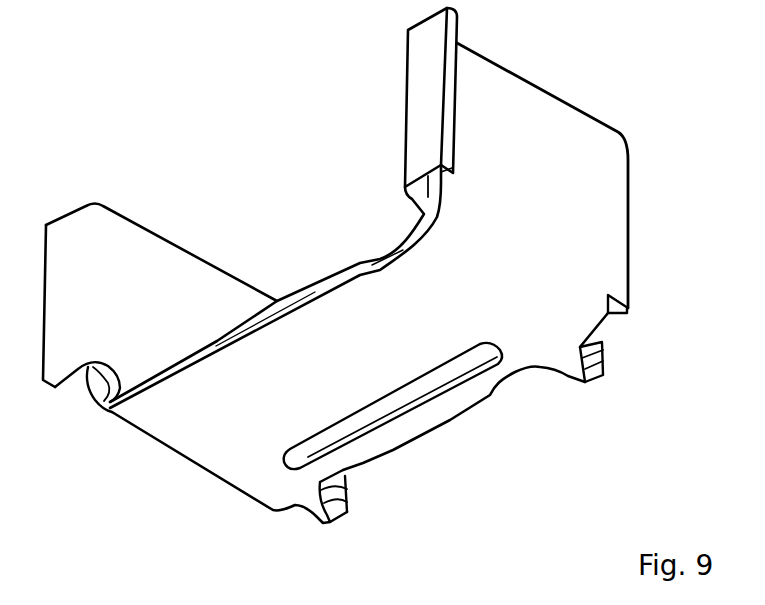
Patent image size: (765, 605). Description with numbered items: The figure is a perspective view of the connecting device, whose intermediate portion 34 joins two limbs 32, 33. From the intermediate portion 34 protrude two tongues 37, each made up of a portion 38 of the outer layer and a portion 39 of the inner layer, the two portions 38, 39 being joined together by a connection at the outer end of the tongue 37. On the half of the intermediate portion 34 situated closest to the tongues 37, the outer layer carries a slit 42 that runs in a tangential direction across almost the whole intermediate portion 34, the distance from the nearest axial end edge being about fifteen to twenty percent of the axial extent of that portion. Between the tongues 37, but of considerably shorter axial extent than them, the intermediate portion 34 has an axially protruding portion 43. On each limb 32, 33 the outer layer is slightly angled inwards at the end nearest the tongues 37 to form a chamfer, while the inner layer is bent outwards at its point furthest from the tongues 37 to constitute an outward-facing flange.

The limb 32 is at (523, 97).
The limb 33 is at (132, 235).
The intermediate portion 34 is at (297, 330).
The protruding tongue 37 is at (638, 380).
The portion of the outer layer 38 is at (602, 380).
The portion of the inner layer 39 is at (602, 352).
The slit 42 is at (383, 403).
The axially protruding portion 43 is at (460, 427).